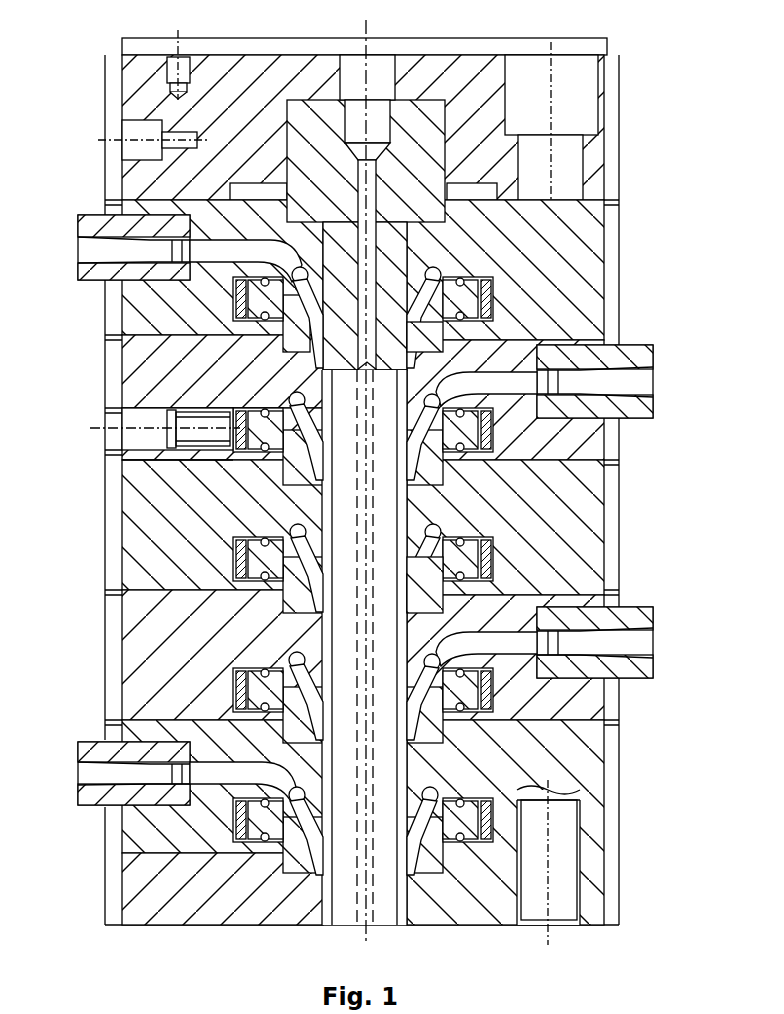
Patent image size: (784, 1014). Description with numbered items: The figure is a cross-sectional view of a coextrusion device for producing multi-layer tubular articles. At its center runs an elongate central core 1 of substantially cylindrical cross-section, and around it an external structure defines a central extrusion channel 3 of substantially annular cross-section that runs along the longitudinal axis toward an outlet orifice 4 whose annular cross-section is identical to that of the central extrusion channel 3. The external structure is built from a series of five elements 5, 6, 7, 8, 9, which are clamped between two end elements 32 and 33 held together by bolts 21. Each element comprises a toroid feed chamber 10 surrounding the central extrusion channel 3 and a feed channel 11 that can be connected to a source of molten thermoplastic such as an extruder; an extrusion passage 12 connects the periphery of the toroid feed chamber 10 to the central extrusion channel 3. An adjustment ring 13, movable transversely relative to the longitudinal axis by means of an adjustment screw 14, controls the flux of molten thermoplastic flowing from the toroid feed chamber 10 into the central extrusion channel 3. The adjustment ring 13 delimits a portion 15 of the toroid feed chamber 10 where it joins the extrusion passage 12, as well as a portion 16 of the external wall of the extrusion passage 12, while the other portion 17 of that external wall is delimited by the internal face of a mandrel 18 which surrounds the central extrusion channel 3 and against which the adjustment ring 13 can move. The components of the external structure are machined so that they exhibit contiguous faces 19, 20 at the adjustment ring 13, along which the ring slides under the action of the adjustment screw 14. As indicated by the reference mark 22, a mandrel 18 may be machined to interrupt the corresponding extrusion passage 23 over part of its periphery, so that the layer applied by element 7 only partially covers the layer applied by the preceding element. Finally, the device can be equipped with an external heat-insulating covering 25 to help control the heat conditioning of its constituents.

The central core 1 is at (425, 185).
The central extrusion channel 3 is at (328, 515).
The outlet orifice 4 is at (335, 926).
The element 5 is at (590, 765).
The element 6 is at (138, 650).
The element 7 is at (588, 580).
The element 8 is at (135, 382).
The element 9 is at (590, 258).
The toroid feed chamber 10 is at (455, 262).
The feed channel 11 is at (120, 240).
The extrusion passage 12 is at (290, 318).
The adjustment ring 13 is at (250, 296).
The adjustment screw 14 is at (182, 428).
The portion of the toroid feed chamber 15 is at (462, 300).
The portion of the external wall of the extrusion passage 16 is at (480, 300).
The other portion of the external wall of the extrusion passage 17 is at (470, 322).
The mandrel 18 is at (472, 345).
The contiguous face 19 is at (457, 548).
The contiguous face 20 is at (435, 575).
The bolt 21 is at (580, 70).
The reference mark 22 is at (596, 612).
The extrusion passage 23 is at (446, 538).
The external heat-insulating covering 25 is at (248, 52).
The end element 32 is at (447, 912).
The end element 33 is at (486, 62).